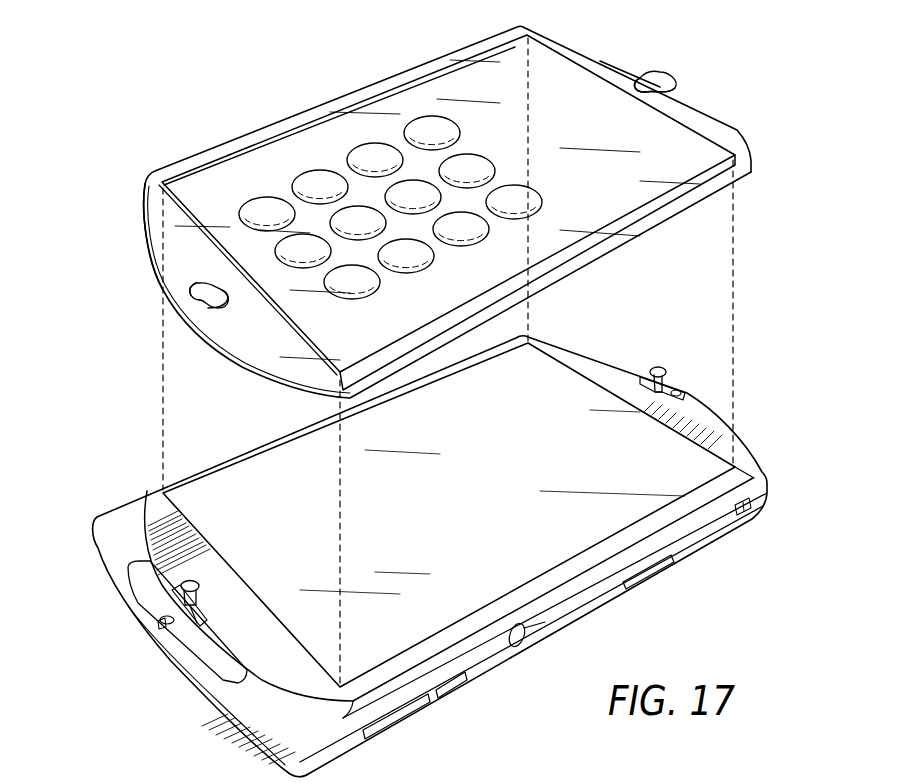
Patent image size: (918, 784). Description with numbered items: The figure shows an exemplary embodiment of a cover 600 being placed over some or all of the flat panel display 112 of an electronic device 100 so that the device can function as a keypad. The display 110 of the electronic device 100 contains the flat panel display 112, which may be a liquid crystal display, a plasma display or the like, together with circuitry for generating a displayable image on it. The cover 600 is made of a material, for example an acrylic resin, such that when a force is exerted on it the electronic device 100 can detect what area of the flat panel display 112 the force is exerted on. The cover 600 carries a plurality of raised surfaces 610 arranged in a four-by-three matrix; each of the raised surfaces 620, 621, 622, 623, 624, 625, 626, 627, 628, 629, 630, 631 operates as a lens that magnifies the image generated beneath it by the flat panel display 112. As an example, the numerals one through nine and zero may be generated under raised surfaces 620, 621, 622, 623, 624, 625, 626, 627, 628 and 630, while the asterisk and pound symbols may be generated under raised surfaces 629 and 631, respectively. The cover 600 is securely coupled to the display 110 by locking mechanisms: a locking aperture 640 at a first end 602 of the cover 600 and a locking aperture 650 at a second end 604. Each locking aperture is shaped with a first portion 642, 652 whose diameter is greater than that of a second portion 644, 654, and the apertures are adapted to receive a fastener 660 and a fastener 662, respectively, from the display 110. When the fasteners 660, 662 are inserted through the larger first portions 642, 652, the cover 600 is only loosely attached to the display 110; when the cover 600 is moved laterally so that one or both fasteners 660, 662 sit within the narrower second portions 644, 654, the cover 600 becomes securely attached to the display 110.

The electronic device 100 is at (770, 359).
The display 110 is at (148, 492).
The flat panel display 112 is at (640, 486).
The cover 600 is at (737, 133).
The first end 602 is at (184, 240).
The second end 604 is at (608, 65).
The raised surfaces 610 is at (417, 113).
The raised surface 620 is at (439, 129).
The raised surface 621 is at (468, 166).
The raised surface 622 is at (515, 198).
The raised surface 623 is at (372, 160).
The raised surface 624 is at (413, 197).
The raised surface 625 is at (470, 230).
The raised surface 626 is at (313, 182).
The raised surface 627 is at (360, 222).
The raised surface 628 is at (409, 255).
The raised surface 629 is at (266, 205).
The raised surface 630 is at (297, 255).
The raised surface 631 is at (343, 278).
The locking aperture 640 is at (198, 301).
The first portion 642 is at (217, 314).
The second portion 644 is at (197, 277).
The locking aperture 650 is at (666, 73).
The first portion 652 is at (663, 97).
The second portion 654 is at (641, 80).
The fastener 660 is at (185, 589).
The fastener 662 is at (658, 366).